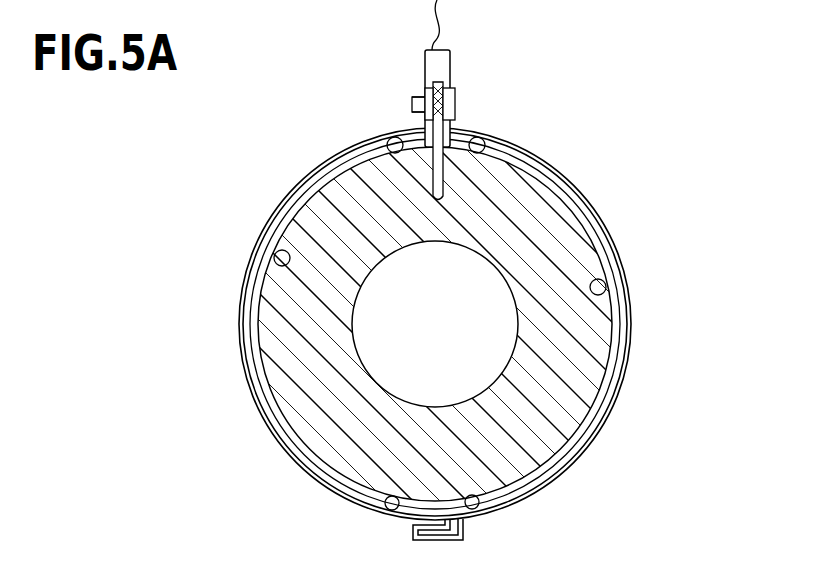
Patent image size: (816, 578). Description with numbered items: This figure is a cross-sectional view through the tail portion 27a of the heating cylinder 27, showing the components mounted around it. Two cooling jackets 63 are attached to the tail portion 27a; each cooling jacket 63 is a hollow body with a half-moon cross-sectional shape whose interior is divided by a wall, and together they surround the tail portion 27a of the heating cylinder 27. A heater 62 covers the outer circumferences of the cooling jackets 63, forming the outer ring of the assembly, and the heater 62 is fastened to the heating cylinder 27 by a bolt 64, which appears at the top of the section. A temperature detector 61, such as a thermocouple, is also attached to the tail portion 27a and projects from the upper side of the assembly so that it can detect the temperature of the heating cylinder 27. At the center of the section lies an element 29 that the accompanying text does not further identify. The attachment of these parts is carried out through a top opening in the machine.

The heating cylinder 27 is at (373, 420).
The tail portion 27a is at (409, 324).
The core 29 is at (420, 318).
The temperature detector 61 is at (438, 68).
The heater 62 is at (300, 183).
The cooling jacket 63 is at (287, 253).
The bolt 64 is at (455, 100).